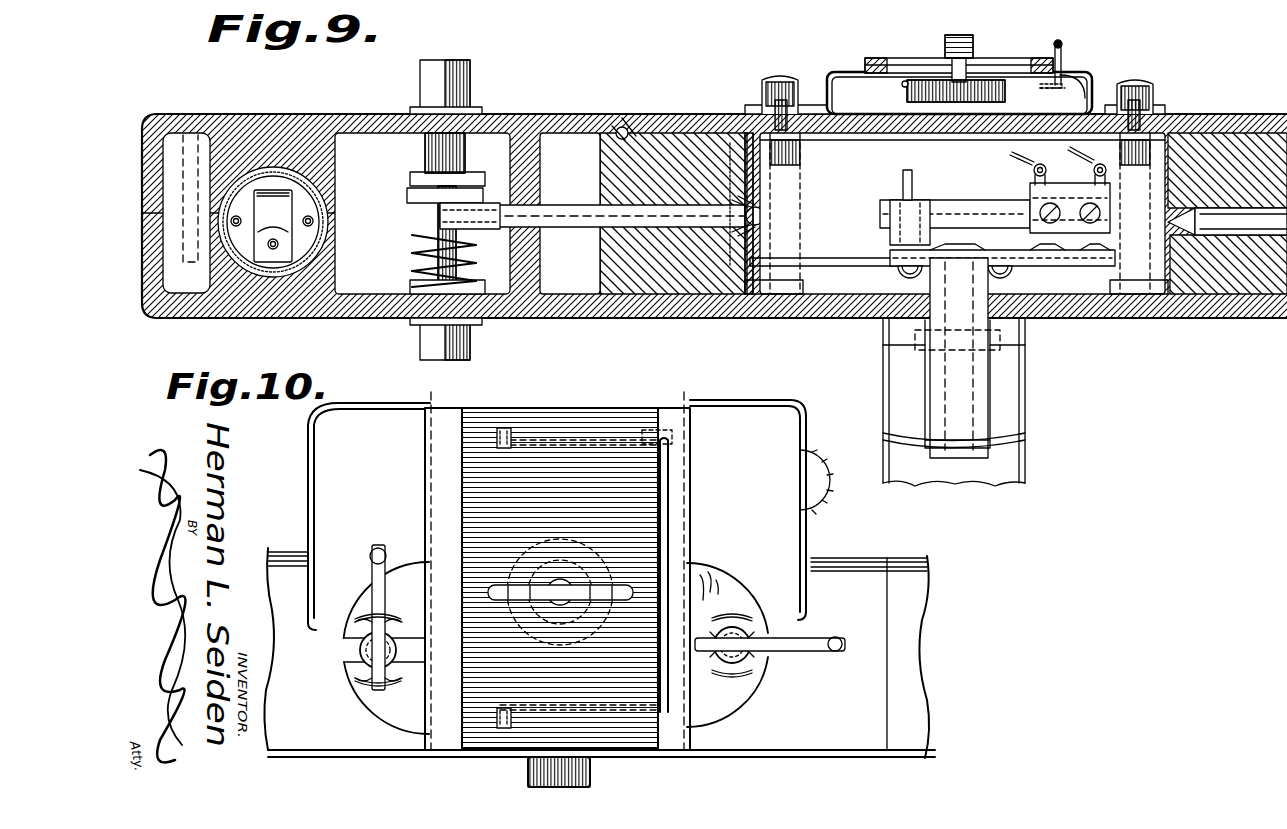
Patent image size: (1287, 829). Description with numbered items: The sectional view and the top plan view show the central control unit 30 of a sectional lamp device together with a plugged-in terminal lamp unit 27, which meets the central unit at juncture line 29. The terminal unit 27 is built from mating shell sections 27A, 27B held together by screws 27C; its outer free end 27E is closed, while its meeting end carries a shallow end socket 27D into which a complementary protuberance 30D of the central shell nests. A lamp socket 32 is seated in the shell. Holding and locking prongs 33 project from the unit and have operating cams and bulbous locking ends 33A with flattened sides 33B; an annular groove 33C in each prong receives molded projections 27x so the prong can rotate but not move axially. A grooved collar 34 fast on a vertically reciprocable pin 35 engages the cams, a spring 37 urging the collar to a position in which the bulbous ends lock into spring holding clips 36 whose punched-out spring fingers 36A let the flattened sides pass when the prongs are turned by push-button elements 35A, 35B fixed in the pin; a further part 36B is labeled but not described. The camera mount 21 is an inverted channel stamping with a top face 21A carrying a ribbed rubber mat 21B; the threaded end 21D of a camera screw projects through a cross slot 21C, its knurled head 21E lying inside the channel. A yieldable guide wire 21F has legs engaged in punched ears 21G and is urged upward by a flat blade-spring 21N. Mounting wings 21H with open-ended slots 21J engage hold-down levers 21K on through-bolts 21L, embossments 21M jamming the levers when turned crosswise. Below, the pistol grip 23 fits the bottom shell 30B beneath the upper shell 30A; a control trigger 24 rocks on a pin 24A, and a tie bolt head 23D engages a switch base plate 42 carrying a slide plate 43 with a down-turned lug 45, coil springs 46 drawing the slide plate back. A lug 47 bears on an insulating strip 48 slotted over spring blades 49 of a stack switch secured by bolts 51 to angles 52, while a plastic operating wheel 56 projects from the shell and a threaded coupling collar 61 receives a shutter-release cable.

In FIG. 9, the camera head or mount 21 is at (1116, 74).
In FIG. 10, the camera head or mount 21 is at (657, 408).
In FIG. 9, the top face 21A is at (1072, 76).
In FIG. 9, the ribbed rubber mat 21B is at (872, 57).
In FIG. 10, the ribbed rubber mat 21B is at (585, 410).
In FIG. 9, the cross slot 21C is at (905, 65).
In FIG. 10, the cross slot 21C is at (505, 600).
In FIG. 9, the threaded end of camera-engaging screw 21D is at (965, 40).
In FIG. 10, the threaded end of camera-engaging screw 21D is at (562, 605).
In FIG. 9, the knurled head 21E is at (928, 135).
In FIG. 10, the knurled head 21E is at (610, 640).
In FIG. 9, the yieldable guide wire 21F is at (1053, 55).
In FIG. 10, the yieldable guide wire 21F is at (665, 500).
In FIG. 9, the punched ears 21G is at (903, 90).
In FIG. 10, the punched ears 21G is at (508, 425).
In FIG. 9, the mounting wings 21H is at (758, 105).
In FIG. 10, the mounting wings 21H is at (392, 705).
In FIG. 10, the open-ended slots 21J is at (345, 652).
In FIG. 9, the hold-down levers 21K is at (795, 100).
In FIG. 10, the hold-down levers 21K is at (372, 560).
In FIG. 9, the through-bolts 21L is at (740, 128).
In FIG. 10, the embossments 21M is at (364, 680).
In FIG. 9, the flat blade-spring 21N is at (1068, 90).
In FIG. 10, the flat blade-spring 21N is at (672, 436).
In FIG. 9, the pistol grip 23 is at (1022, 460).
In FIG. 9, the head of tie bolt 23D is at (958, 258).
In FIG. 9, the control trigger 24 is at (970, 398).
In FIG. 9, the pin 24A is at (1030, 342).
In FIG. 9, the terminal lamp unit 27 is at (552, 108).
In FIG. 9, the shell section 27A is at (322, 110).
In FIG. 9, the shell section 27B is at (287, 320).
In FIG. 9, the screws 27C is at (200, 125).
In FIG. 9, the shallow end socket 27D is at (614, 132).
In FIG. 9, the outer free end 27E is at (137, 125).
In FIG. 9, the molded projections 27x is at (505, 215).
In FIG. 9, the meeting juncture 29 is at (622, 128).
In FIG. 9, the central control unit 30 is at (690, 108).
In FIG. 9, the upper shell section 30A is at (1248, 118).
In FIG. 9, the bottom shell section 30B is at (1230, 318).
In FIG. 9, the protuberance 30D is at (628, 130).
In FIG. 9, the lamp socket 32 is at (288, 185).
In FIG. 9, the holding and locking prongs 33 is at (560, 208).
In FIG. 9, the operating cams / bulbous locking ends 33A is at (450, 198).
In FIG. 9, the flattened sides 33B is at (764, 212).
In FIG. 9, the annular groove 33C is at (535, 224).
In FIG. 9, the grooved collar 34 is at (415, 210).
In FIG. 9, the pin 35 is at (437, 230).
In FIG. 9, the push-button element 35A is at (458, 78).
In FIG. 9, the push-button element 35B is at (468, 343).
In FIG. 9, the spring holding clips 36 is at (738, 180).
In FIG. 9, the spring fingers 36A is at (750, 200).
In FIG. 9, the spring rod 36B is at (1241, 221).
In FIG. 9, the spring 37 is at (415, 252).
In FIG. 9, the switch base plate 42 is at (845, 266).
In FIG. 9, the slide plate 43 is at (925, 250).
In FIG. 9, the down-turned lug 45 is at (972, 296).
In FIG. 9, the coil springs 46 is at (900, 278).
In FIG. 9, the lug 47 is at (915, 210).
In FIG. 9, the insulating strip 48 is at (912, 185).
In FIG. 9, the spring blades 49 is at (972, 225).
In FIG. 9, the bolts 51 is at (1090, 205).
In FIG. 9, the angles 52 is at (1035, 188).
In FIG. 10, the plastic operating wheel 56 is at (812, 465).
In FIG. 10, the threaded coupling collar 61 is at (592, 768).